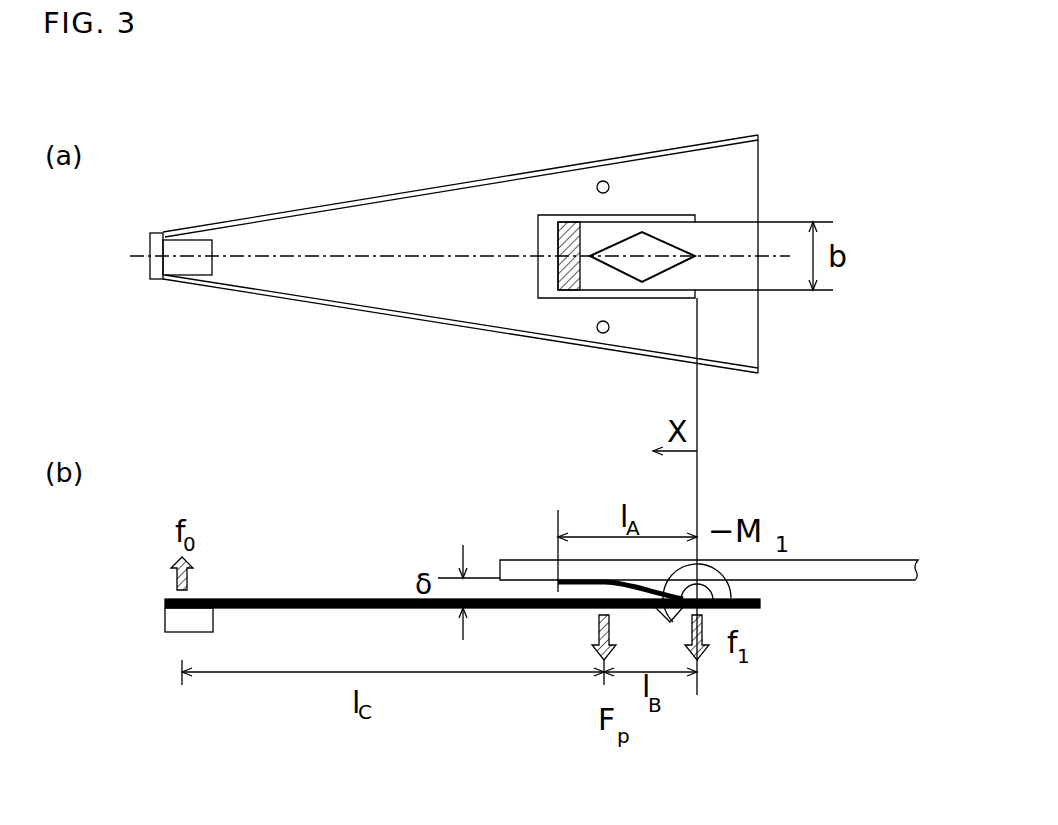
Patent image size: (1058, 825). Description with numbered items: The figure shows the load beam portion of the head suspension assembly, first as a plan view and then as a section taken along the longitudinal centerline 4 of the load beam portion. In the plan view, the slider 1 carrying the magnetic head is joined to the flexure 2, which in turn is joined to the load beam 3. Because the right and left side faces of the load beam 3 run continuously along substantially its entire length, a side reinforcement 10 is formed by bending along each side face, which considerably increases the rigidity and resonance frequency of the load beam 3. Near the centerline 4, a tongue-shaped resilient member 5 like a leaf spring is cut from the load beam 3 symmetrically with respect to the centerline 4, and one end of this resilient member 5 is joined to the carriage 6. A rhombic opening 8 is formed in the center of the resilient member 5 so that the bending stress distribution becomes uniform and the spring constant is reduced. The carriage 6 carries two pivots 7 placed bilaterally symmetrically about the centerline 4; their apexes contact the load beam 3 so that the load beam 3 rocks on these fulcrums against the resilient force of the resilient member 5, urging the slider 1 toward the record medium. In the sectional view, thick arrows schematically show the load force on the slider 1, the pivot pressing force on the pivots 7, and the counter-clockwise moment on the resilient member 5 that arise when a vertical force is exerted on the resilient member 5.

The slider 1 is at (192, 250).
The flexure 2 is at (155, 267).
The load beam 3 is at (408, 232).
The longitudinal centerline 4 is at (482, 253).
The resilient member 5 is at (605, 240).
The carriage 6 is at (537, 570).
The pivots 7 is at (603, 181).
The rhombic opening 8 is at (637, 247).
The side reinforcement 10 is at (317, 207).